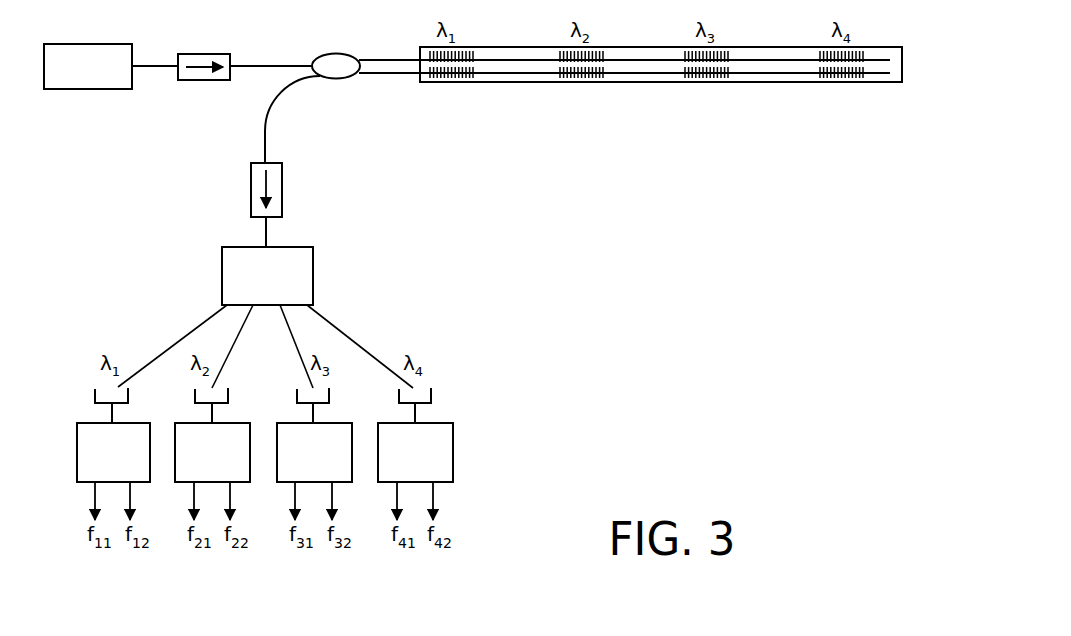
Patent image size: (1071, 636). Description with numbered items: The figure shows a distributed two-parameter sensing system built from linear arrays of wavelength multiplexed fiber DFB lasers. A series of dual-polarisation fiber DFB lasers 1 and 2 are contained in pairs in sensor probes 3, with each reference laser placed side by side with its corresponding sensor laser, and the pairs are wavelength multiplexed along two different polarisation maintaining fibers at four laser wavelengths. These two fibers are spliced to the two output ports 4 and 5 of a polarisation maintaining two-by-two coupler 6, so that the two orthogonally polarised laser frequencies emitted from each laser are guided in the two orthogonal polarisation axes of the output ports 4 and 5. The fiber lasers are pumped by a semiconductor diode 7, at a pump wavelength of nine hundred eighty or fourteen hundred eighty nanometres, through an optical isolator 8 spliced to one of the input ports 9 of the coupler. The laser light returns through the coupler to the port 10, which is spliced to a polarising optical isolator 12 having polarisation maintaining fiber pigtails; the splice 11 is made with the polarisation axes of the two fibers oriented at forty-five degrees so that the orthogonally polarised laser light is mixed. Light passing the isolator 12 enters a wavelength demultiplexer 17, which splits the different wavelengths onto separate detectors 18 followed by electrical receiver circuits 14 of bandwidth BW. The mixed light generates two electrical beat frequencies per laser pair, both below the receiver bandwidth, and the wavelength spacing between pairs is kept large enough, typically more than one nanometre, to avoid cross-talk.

The dual-polarisation fiber DFB laser 1 is at (432, 51).
The dual-polarisation fiber DFB laser 2 is at (451, 81).
The sensor probe 3 is at (517, 83).
The output port 4 is at (392, 57).
The output port 5 is at (392, 76).
The polarisation maintaining 2×2 coupler 6 is at (338, 53).
The semiconductor diode 7 is at (80, 80).
The optical isolator 8 is at (205, 53).
The input port 9 is at (268, 63).
The port 10 is at (285, 90).
The splice 11 is at (270, 152).
The polarising optical isolator 12 is at (283, 191).
The electrical receiver circuit 14 is at (100, 466).
The wavelength demultiplexer 17 is at (255, 289).
The detector 18 is at (95, 398).